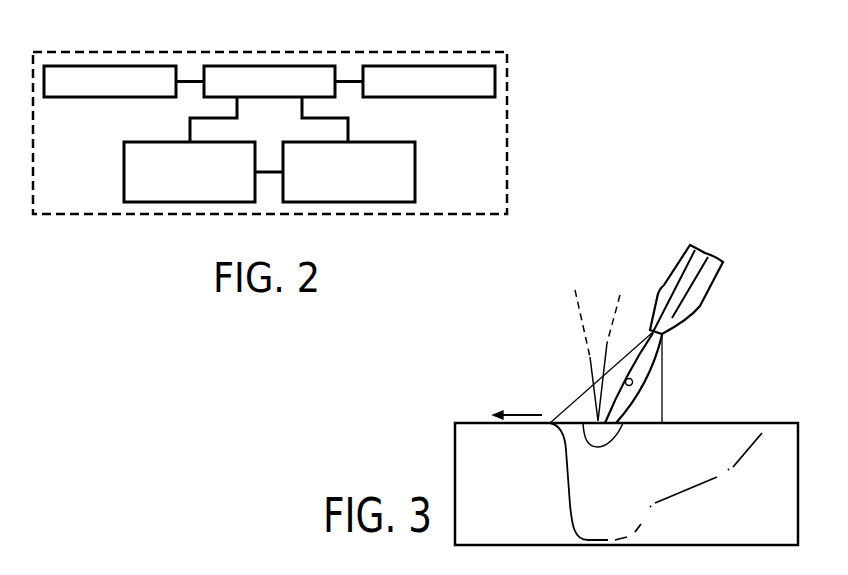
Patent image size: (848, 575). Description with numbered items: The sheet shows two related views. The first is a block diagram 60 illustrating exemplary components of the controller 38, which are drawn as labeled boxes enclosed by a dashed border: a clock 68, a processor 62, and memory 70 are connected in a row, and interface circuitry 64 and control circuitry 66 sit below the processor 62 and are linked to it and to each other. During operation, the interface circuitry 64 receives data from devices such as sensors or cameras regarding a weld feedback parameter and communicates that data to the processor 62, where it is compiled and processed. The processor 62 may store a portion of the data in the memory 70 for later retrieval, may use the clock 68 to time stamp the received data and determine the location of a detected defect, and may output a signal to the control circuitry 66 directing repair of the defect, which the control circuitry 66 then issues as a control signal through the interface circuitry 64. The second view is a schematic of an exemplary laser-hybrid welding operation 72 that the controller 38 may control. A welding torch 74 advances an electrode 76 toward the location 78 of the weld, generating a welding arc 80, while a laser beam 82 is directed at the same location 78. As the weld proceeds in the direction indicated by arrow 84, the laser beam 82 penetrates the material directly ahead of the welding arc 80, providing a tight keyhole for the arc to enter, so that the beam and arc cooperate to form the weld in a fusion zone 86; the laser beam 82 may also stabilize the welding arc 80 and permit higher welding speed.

In FIG. 2, the controller 38 is at (507, 132).
In FIG. 2, the block diagram 60 is at (325, 133).
In FIG. 2, the processor 62 is at (268, 65).
In FIG. 2, the interface circuitry 64 is at (188, 203).
In FIG. 2, the control circuitry 66 is at (350, 203).
In FIG. 2, the clock 68 is at (112, 65).
In FIG. 2, the memory 70 is at (430, 65).
In FIG. 3, the laser-hybrid welding operation 72 is at (659, 307).
In FIG. 3, the welding torch 74 is at (712, 280).
In FIG. 3, the electrode 76 is at (667, 328).
In FIG. 3, the location of the weld 78 is at (595, 410).
In FIG. 3, the welding arc 80 is at (662, 390).
In FIG. 3, the laser beam 82 is at (585, 330).
In FIG. 3, the arrow 84 is at (523, 413).
In FIG. 3, the fusion zone 86 is at (593, 483).